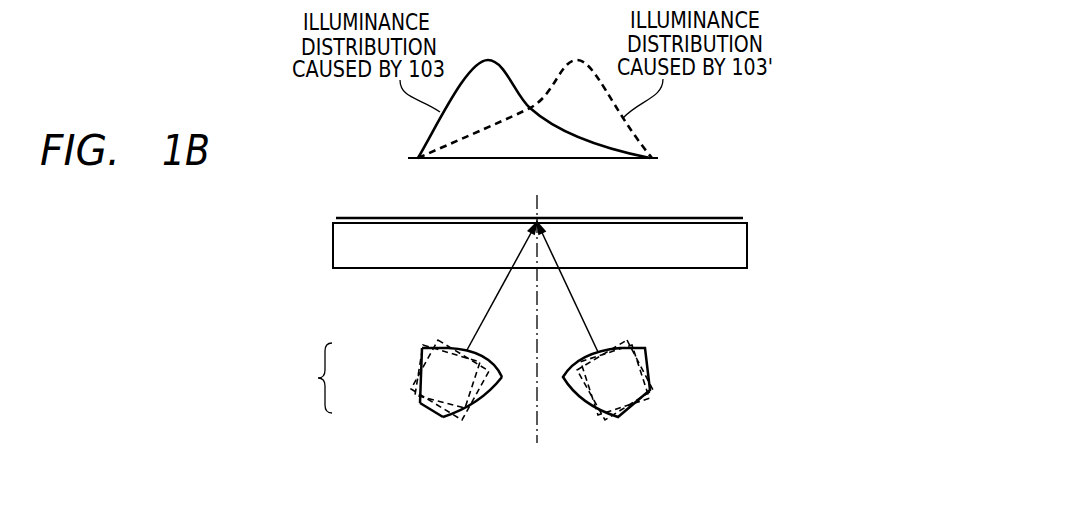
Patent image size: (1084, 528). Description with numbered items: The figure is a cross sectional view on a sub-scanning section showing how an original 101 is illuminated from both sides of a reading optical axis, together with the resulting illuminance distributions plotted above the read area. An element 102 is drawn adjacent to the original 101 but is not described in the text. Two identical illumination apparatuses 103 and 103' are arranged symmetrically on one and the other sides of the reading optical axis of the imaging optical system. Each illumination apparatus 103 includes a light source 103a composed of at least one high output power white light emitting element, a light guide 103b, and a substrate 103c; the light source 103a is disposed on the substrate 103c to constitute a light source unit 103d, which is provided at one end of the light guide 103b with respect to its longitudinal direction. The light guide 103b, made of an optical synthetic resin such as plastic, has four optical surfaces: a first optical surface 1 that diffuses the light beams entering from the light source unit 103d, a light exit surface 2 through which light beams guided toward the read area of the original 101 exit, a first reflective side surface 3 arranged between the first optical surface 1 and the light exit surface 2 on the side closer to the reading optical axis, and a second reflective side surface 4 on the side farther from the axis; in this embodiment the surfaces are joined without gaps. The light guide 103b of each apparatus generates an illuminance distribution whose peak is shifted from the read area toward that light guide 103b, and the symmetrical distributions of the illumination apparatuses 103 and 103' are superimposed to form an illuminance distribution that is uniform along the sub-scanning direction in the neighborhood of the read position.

The original 101 is at (538, 217).
The substrate / plate 102 is at (645, 228).
The illumination apparatus 103 is at (395, 394).
The illumination apparatus 103' is at (615, 422).
The light source 103a is at (426, 388).
The light guide 103b is at (420, 350).
The substrate 103c is at (415, 395).
The light source unit 103d is at (302, 378).
The first optical surface 1 is at (425, 413).
The light exit surface 2 is at (485, 358).
The first reflective side surface 3 is at (485, 395).
The second reflective side surface 4 is at (417, 360).